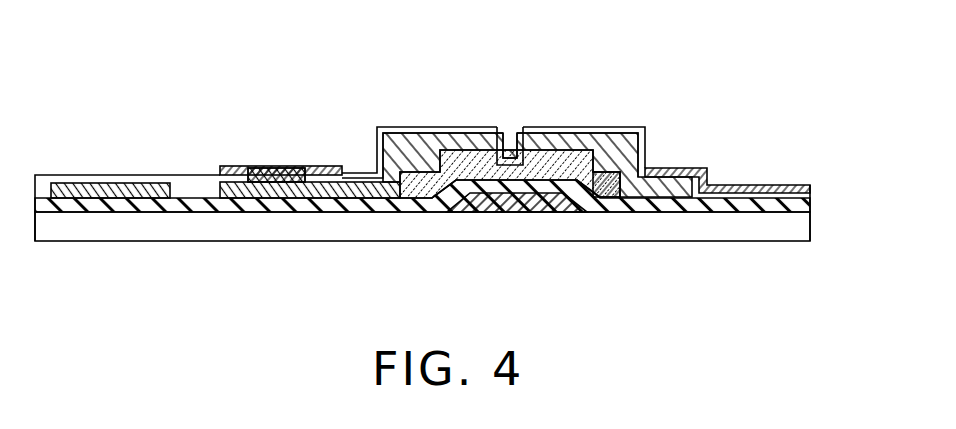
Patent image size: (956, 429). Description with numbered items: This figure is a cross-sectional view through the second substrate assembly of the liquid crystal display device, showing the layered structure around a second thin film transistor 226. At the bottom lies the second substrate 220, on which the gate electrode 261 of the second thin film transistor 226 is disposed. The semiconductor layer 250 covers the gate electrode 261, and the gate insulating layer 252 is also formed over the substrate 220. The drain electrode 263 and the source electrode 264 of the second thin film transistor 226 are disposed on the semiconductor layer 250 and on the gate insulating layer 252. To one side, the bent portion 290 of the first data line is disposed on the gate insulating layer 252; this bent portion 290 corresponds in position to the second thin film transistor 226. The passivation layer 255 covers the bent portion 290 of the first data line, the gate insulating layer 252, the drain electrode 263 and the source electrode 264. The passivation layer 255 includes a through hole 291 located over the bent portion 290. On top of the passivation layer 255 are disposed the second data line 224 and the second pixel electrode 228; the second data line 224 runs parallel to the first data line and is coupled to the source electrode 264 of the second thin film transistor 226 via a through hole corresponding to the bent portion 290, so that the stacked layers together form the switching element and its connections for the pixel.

The second substrate 220 is at (692, 227).
The gate insulating layer 252 is at (765, 200).
The gate electrode 261 is at (515, 198).
The bent portion 290 is at (118, 182).
The source electrode 264 is at (420, 150).
The drain electrode 263 is at (598, 172).
The semiconductor layer 250 is at (477, 163).
The passivation layer 255 is at (588, 133).
The second data line 224 is at (312, 166).
The through hole 291 is at (285, 167).
The second pixel electrode 228 is at (755, 185).
The second thin film transistor 226 is at (511, 121).